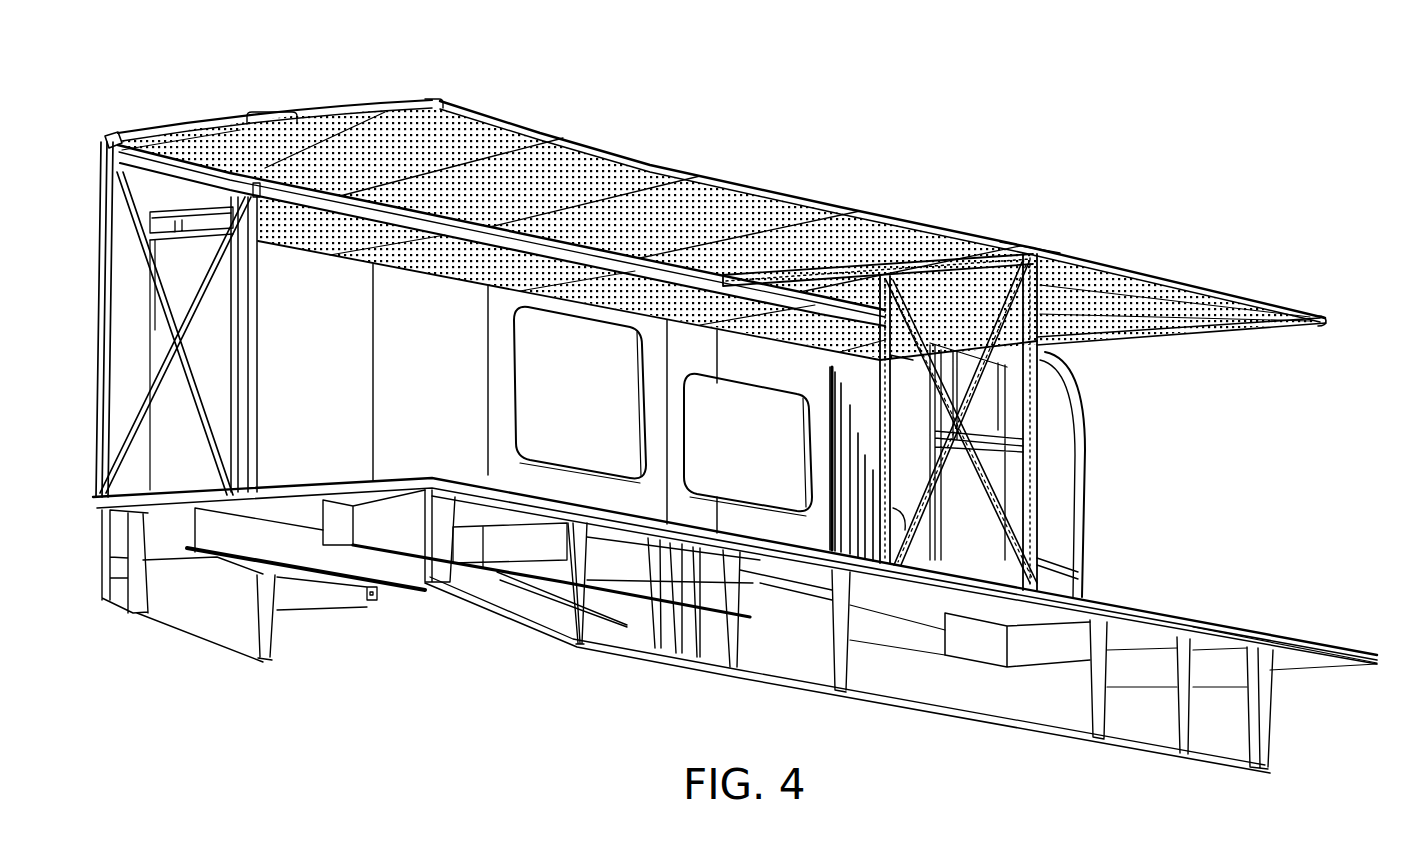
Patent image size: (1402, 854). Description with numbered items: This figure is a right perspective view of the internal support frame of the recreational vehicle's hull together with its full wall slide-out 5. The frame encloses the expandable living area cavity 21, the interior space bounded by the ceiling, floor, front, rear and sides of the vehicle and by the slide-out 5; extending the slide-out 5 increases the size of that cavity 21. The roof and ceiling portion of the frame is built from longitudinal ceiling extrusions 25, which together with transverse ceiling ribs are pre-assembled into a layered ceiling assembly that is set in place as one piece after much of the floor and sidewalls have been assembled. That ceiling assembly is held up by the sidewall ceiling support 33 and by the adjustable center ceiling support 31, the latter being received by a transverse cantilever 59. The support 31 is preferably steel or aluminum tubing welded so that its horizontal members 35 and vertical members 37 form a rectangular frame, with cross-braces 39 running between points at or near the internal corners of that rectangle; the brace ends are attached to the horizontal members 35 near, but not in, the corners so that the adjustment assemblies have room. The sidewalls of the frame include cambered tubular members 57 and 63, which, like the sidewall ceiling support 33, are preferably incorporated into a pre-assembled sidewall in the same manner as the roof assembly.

The full wall slide-out 5 is at (128, 472).
The expandable living area cavity 21 is at (338, 288).
The longitudinal supports (ceiling extrusions) 25 is at (108, 134).
The adjustable center ceiling support 31 is at (1044, 543).
The sidewall ceiling support 33 is at (88, 273).
The horizontal members 35 is at (1060, 253).
The vertical members 37 is at (1062, 434).
The cross-braces 39 is at (978, 392).
The cambered tubular member 57 is at (158, 172).
The adjustable center ceiling support receiving transverse support (transverse canti 59 is at (1030, 248).
The cambered tubular member 63 is at (130, 147).